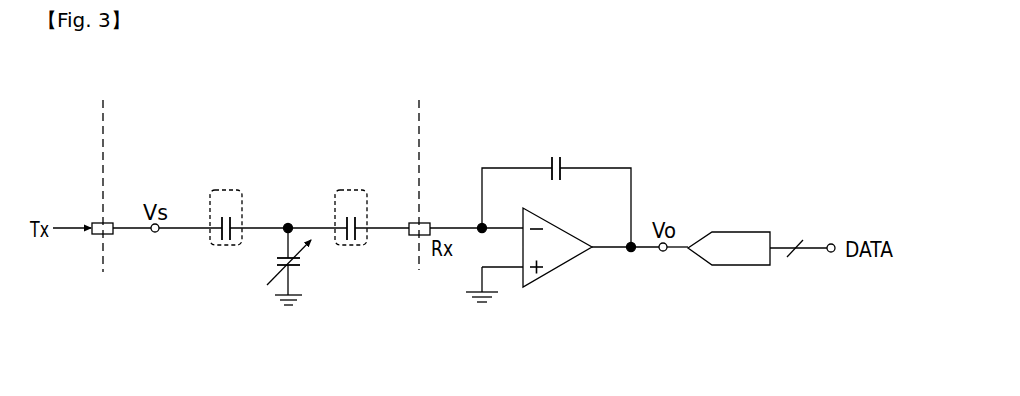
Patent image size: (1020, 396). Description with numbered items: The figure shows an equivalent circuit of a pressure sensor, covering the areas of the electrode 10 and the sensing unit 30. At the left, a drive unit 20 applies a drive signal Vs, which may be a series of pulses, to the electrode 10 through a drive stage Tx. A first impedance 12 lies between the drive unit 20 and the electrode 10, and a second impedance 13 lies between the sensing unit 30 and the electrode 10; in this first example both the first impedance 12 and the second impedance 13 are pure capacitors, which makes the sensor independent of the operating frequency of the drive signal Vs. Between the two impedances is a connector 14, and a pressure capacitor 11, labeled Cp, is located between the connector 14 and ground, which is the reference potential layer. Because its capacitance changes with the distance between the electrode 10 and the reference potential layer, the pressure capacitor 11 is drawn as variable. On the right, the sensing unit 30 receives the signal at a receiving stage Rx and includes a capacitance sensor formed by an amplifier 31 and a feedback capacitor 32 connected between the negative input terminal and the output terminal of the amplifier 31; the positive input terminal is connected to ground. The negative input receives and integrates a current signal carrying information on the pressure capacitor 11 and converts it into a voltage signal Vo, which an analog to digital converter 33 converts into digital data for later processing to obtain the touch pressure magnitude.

The electrode 10 is at (240, 117).
The pressure capacitor 11 is at (317, 282).
The first impedance 12 is at (210, 247).
The second impedance 13 is at (338, 190).
The connector 14 is at (287, 222).
The drive unit 20 is at (87, 186).
The sensing unit 30 is at (435, 185).
The amplifier 31 is at (567, 263).
The feedback capacitor 32 is at (562, 160).
The analog to digital converter 33 is at (742, 231).